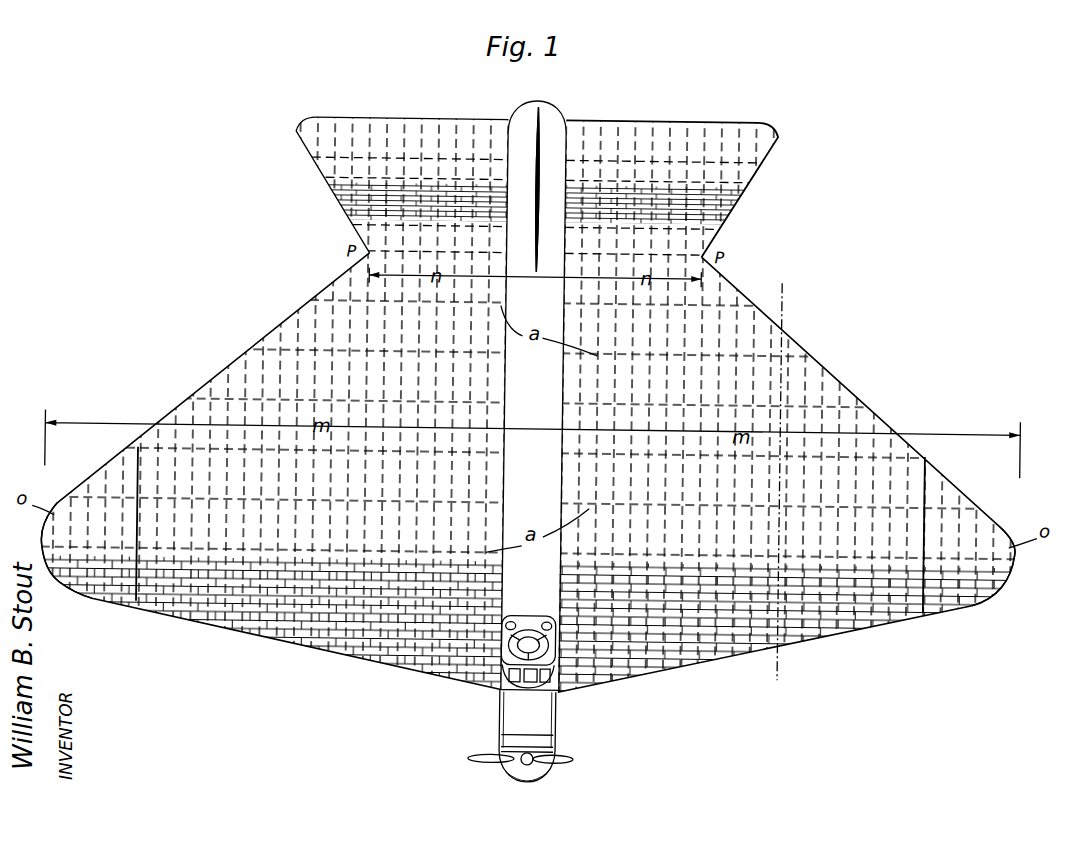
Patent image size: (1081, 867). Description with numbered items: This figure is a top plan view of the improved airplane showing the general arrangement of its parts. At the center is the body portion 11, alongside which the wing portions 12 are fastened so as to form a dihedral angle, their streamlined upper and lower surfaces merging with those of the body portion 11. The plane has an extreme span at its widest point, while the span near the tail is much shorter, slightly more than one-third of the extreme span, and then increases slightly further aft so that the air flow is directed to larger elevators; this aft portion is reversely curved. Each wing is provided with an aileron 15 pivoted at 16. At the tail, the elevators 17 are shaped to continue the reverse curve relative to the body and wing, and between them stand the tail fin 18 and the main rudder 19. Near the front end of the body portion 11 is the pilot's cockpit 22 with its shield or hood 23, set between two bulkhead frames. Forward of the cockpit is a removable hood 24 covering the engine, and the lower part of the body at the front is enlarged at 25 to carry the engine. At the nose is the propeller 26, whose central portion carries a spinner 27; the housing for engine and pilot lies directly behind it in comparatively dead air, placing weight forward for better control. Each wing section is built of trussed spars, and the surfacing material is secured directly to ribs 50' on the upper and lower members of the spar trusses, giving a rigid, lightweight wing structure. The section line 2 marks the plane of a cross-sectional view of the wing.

The body portion 11 is at (534, 397).
The wing portions 12 is at (528, 474).
The aileron 15 is at (528, 557).
The aileron pivot 16 is at (205, 552).
The elevators 17 is at (384, 121).
The tail fin 18 is at (532, 240).
The main rudder 19 is at (543, 130).
The section line 2- 2 is at (805, 677).
The pilot's cockpit 22 is at (512, 628).
The shield or hood 23 is at (505, 690).
The removable hood 24 is at (527, 727).
The enlarged lower body portion 25 is at (560, 738).
The propeller 26 is at (578, 762).
The spinner 27 is at (512, 780).
The ribs 50' is at (441, 413).